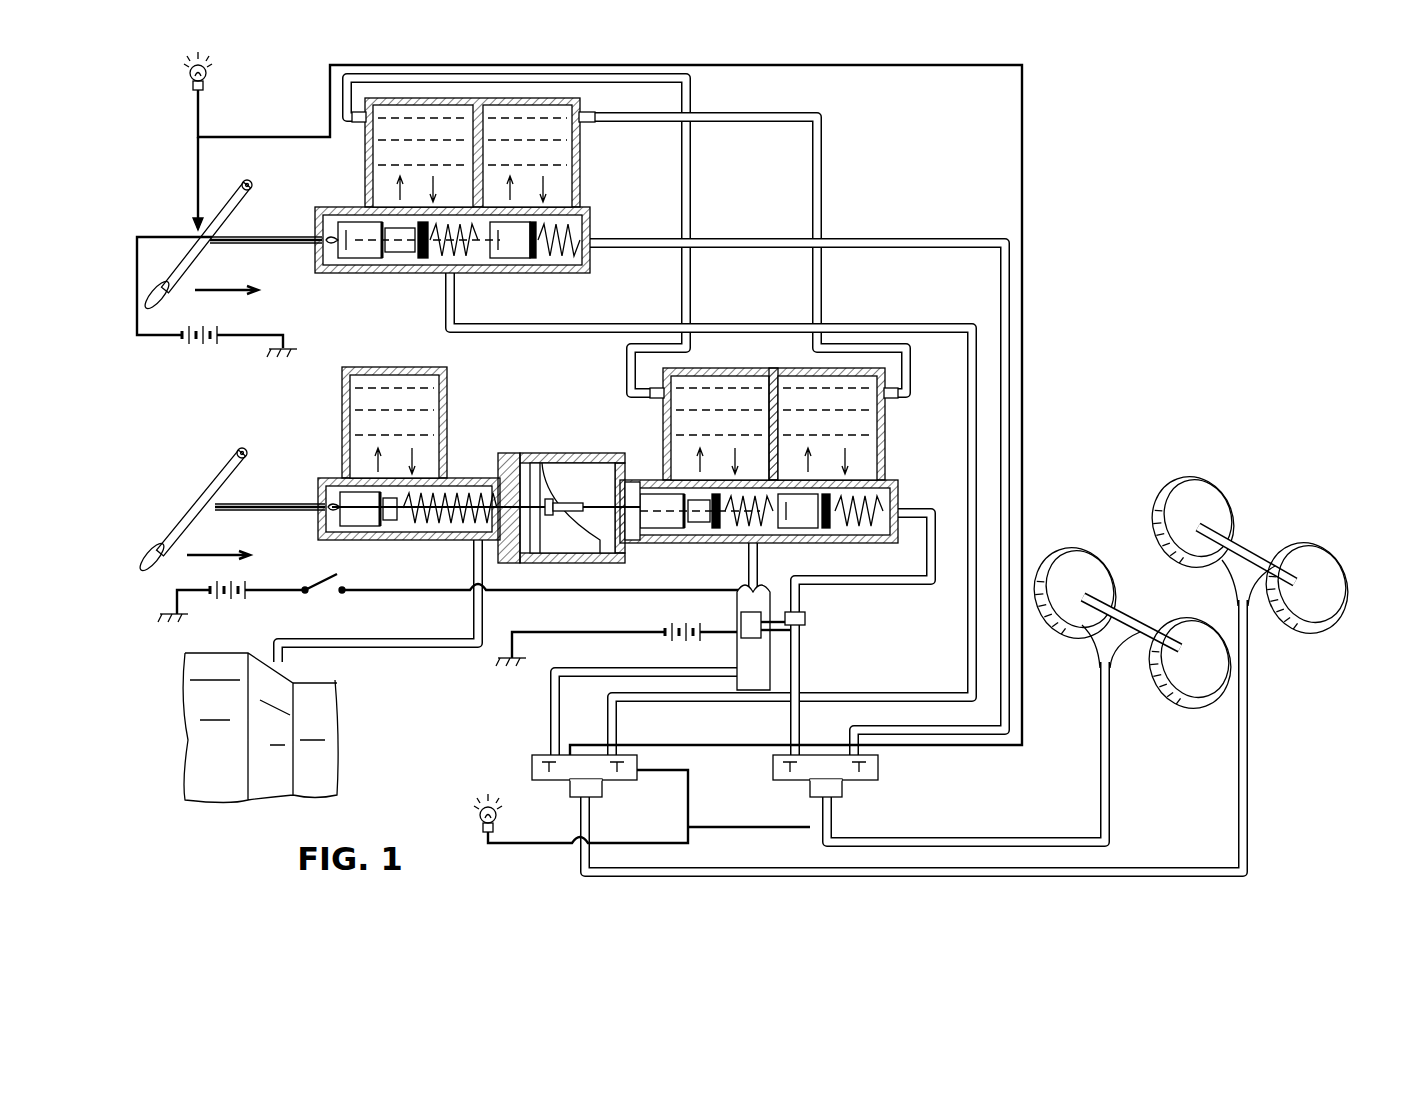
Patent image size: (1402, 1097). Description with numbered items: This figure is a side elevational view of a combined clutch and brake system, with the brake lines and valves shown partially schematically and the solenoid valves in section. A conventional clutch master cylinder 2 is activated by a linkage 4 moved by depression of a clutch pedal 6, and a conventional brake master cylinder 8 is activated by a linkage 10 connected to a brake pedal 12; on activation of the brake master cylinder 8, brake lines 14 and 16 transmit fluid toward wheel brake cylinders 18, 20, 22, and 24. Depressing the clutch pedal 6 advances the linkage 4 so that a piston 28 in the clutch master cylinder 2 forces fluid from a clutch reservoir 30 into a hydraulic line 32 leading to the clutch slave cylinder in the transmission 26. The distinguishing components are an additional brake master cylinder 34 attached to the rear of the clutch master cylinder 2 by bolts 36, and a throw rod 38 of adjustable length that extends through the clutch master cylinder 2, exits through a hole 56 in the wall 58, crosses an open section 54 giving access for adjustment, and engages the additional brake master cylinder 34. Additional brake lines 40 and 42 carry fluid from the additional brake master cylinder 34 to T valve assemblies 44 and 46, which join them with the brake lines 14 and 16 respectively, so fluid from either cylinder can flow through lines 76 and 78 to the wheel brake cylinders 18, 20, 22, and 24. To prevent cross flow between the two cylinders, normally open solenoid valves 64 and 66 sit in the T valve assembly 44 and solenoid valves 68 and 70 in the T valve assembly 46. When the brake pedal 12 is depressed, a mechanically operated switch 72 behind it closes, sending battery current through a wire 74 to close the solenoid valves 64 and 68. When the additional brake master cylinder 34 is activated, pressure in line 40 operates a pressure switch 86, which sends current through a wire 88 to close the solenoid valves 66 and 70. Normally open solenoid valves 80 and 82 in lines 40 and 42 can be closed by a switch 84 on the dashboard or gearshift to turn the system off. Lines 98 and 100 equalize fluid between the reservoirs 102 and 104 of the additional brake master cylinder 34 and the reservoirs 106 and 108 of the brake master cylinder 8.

The clutch master cylinder 2 is at (444, 480).
The linkage 4 is at (290, 504).
The clutch pedal 6 is at (145, 550).
The brake master cylinder 8 is at (585, 210).
The linkage 10 is at (270, 237).
The brake pedal 12 is at (137, 280).
The brake line 14 is at (607, 322).
The brake line 16 is at (950, 238).
The wheel brake cylinder 18 is at (1080, 552).
The wheel brake cylinder 20 is at (1185, 622).
The wheel brake cylinder 22 is at (1185, 480).
The wheel brake cylinder 24 is at (1300, 540).
The transmission 26 is at (345, 744).
The piston 28 is at (332, 480).
The clutch reservoir 30 is at (393, 367).
The hydraulic line 32 is at (388, 637).
The additional brake master cylinder 34 is at (889, 480).
The bolts 36 is at (500, 470).
The throw rod 38 is at (535, 495).
The additional brake line 40 is at (745, 575).
The additional brake line 42 is at (940, 520).
The T valve assembly 44 is at (559, 788).
The T valve assembly 46 is at (797, 790).
The section 54 is at (595, 453).
The hole 56 is at (580, 558).
The wall 58 is at (555, 562).
The solenoid valve 64 is at (550, 765).
The solenoid valve 66 is at (625, 770).
The solenoid valve 68 is at (790, 768).
The solenoid valve 70 is at (880, 768).
The switch 72 is at (190, 226).
The wire 74 is at (285, 136).
The line 76 is at (680, 870).
The line 78 is at (940, 840).
The solenoid valve 80 is at (748, 608).
The solenoid valve 82 is at (806, 618).
The switch 84 is at (355, 584).
The pressure switch 86 is at (800, 635).
The wire 88 is at (800, 650).
The line 98 is at (600, 88).
The line 100 is at (788, 116).
The reservoir 102 is at (738, 368).
The reservoir 104 is at (842, 368).
The reservoir 106 is at (362, 100).
The reservoir 108 is at (590, 112).